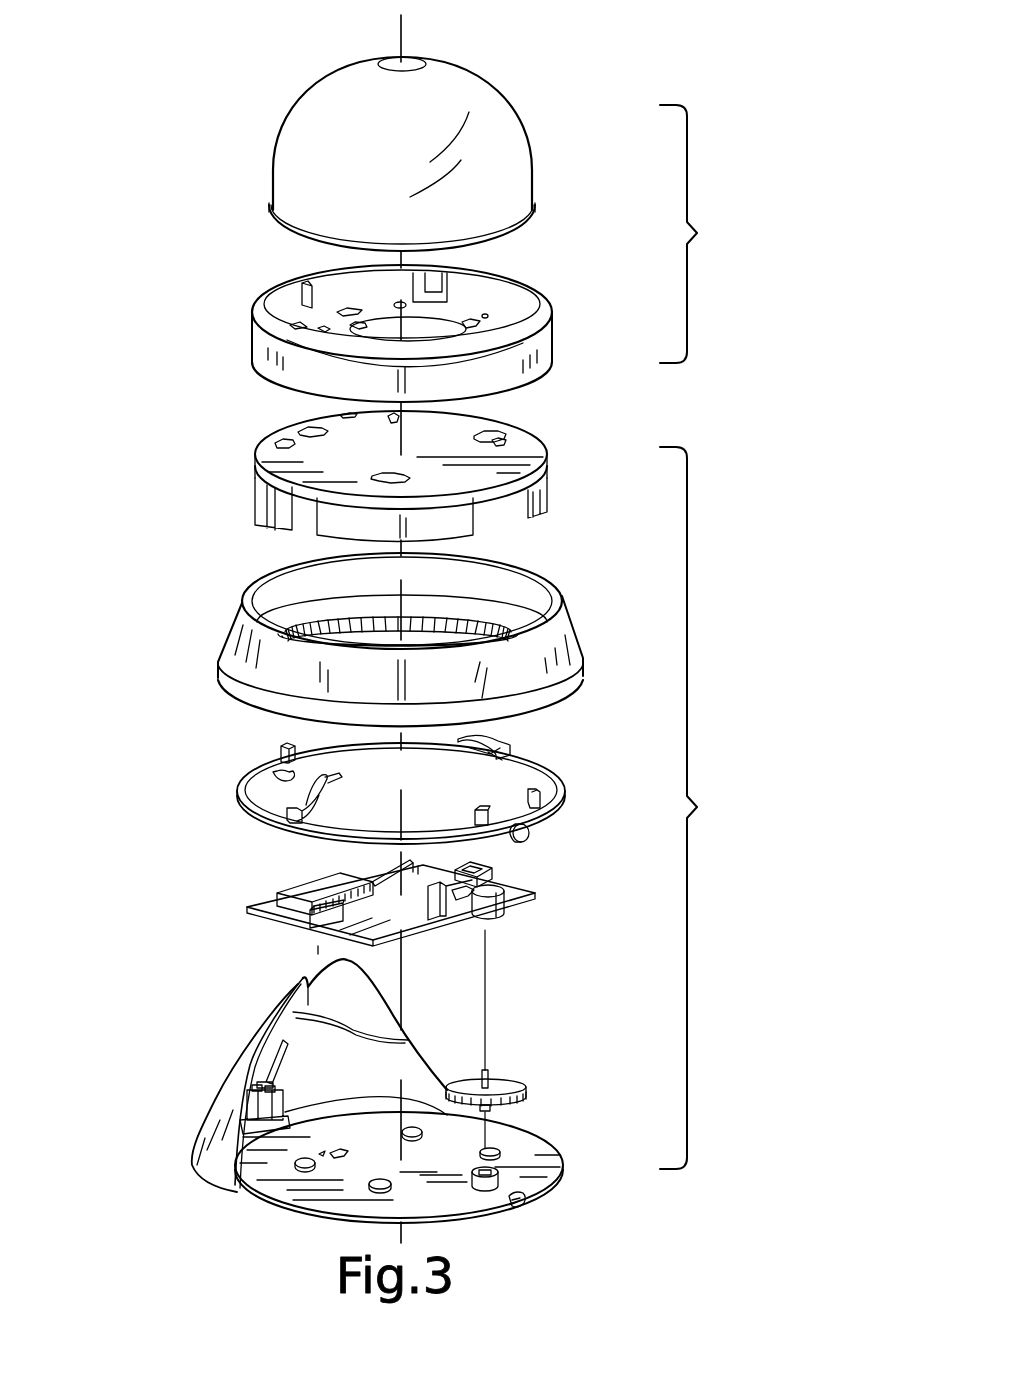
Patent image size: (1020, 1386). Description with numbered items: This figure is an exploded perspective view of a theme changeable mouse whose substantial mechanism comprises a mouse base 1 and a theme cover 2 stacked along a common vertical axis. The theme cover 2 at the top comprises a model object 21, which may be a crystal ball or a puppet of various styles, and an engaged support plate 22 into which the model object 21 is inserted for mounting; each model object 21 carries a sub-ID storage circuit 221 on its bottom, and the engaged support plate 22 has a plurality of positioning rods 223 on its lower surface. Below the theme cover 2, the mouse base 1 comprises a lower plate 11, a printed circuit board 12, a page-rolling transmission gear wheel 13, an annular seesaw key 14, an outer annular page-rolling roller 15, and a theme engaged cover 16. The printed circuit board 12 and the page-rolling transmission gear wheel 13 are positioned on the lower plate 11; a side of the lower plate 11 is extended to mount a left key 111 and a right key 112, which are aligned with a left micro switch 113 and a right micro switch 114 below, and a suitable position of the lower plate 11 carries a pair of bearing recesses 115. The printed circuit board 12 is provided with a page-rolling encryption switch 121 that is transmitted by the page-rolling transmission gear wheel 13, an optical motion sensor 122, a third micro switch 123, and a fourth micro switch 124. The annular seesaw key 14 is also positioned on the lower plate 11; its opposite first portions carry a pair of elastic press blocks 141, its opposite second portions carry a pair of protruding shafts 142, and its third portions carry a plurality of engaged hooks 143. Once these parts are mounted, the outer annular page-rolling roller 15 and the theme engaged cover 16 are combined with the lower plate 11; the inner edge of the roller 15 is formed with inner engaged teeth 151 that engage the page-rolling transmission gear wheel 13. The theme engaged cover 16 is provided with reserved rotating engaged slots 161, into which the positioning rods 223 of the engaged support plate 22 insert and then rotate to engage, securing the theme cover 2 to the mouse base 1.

The mouse base 1 is at (689, 808).
The theme cover 2 is at (689, 234).
The lower plate 11 is at (545, 1152).
The left key 111 is at (225, 1100).
The right key 112 is at (325, 985).
The left micro switch 113 is at (245, 1092).
The right micro switch 114 is at (260, 1082).
The bearing recesses 115 is at (520, 1205).
The printed circuit board 12 is at (255, 905).
The page-rolling encryption switch 121 is at (498, 914).
The optical motion sensor 122 is at (292, 888).
The third micro switch 123 is at (325, 898).
The fourth micro switch 124 is at (492, 877).
The page-rolling transmission gear wheel 13 is at (505, 1083).
The annular seesaw key 14 is at (240, 780).
The elastic press blocks 141 is at (322, 777).
The protruding shafts 142 is at (531, 834).
The engaged hooks 143 is at (478, 810).
The outer annular page-rolling roller 15 is at (570, 630).
The inner engaged teeth 151 is at (495, 626).
The theme engaged cover 16 is at (545, 474).
The rotating engaged slots 161 is at (500, 432).
The model object 21 is at (515, 148).
The engaged support plate 22 is at (540, 330).
The sub-ID storage circuit 221 is at (300, 320).
The positioning rods 223 is at (303, 288).